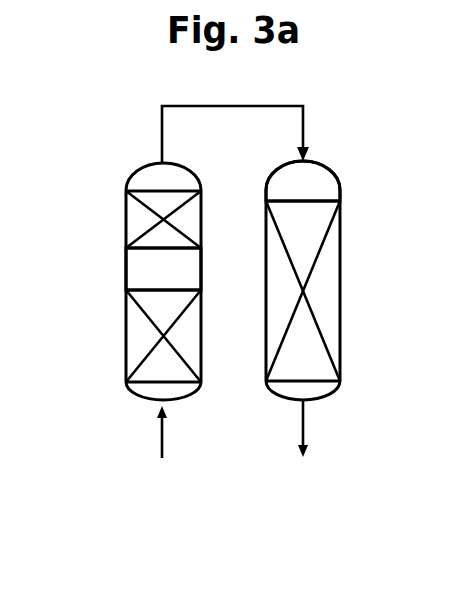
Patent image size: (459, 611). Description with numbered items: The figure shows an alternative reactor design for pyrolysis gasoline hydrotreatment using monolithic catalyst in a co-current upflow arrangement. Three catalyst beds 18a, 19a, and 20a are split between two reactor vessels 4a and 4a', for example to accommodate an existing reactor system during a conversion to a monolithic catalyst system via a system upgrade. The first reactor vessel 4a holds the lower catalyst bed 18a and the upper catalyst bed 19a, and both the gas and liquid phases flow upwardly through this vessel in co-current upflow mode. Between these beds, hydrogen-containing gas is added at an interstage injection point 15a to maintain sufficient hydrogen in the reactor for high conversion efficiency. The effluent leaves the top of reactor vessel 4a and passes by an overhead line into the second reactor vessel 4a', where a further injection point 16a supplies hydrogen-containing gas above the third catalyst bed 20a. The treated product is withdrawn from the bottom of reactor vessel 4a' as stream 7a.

The reactor vessel 4a is at (121, 298).
The catalyst bed 19a is at (155, 222).
The injection point 15a is at (162, 267).
The catalyst bed 18a is at (148, 339).
The reactor vessel 4a' is at (332, 295).
The injection point 16a is at (310, 182).
The catalyst bed 20a is at (297, 338).
The product stream 7a is at (295, 446).